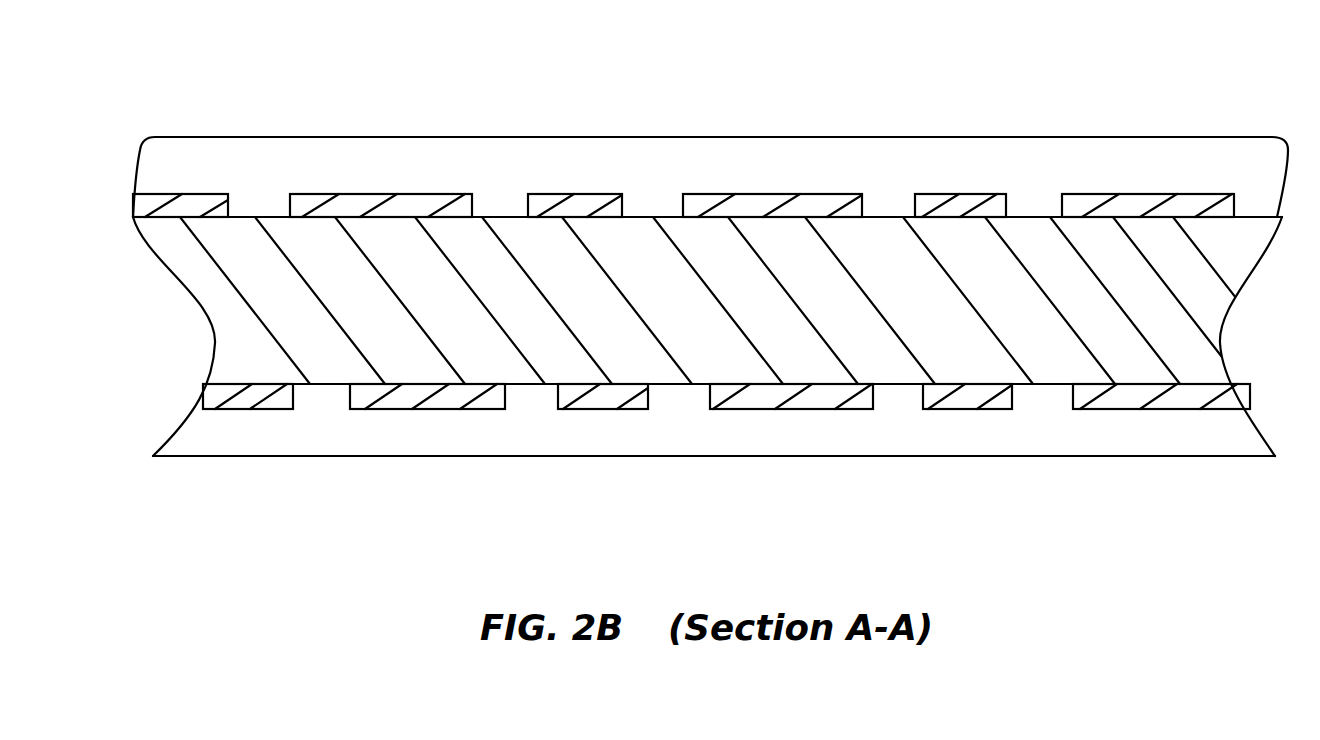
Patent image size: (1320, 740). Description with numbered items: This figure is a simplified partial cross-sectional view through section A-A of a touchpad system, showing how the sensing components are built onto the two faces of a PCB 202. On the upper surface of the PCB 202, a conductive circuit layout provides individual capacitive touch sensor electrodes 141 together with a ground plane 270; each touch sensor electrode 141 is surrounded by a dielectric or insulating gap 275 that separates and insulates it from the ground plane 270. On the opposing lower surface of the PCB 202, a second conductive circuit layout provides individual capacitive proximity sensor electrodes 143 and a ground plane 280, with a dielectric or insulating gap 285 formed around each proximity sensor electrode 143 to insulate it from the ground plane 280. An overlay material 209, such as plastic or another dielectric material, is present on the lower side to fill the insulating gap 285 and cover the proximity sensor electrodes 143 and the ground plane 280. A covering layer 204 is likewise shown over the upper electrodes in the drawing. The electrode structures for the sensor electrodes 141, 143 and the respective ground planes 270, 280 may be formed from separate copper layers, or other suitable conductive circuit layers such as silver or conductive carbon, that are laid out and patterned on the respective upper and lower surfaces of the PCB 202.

The capacitive touch sensor electrode 141 is at (407, 203).
The capacitive proximity sensor electrode 143 is at (450, 402).
The PCB 202 is at (228, 343).
The top cover layer 204 is at (150, 177).
The overlay material 209 is at (210, 437).
The ground plane 270 is at (187, 202).
The insulating gap 275 is at (265, 202).
The ground plane 280 is at (243, 398).
The insulating gap 285 is at (322, 398).